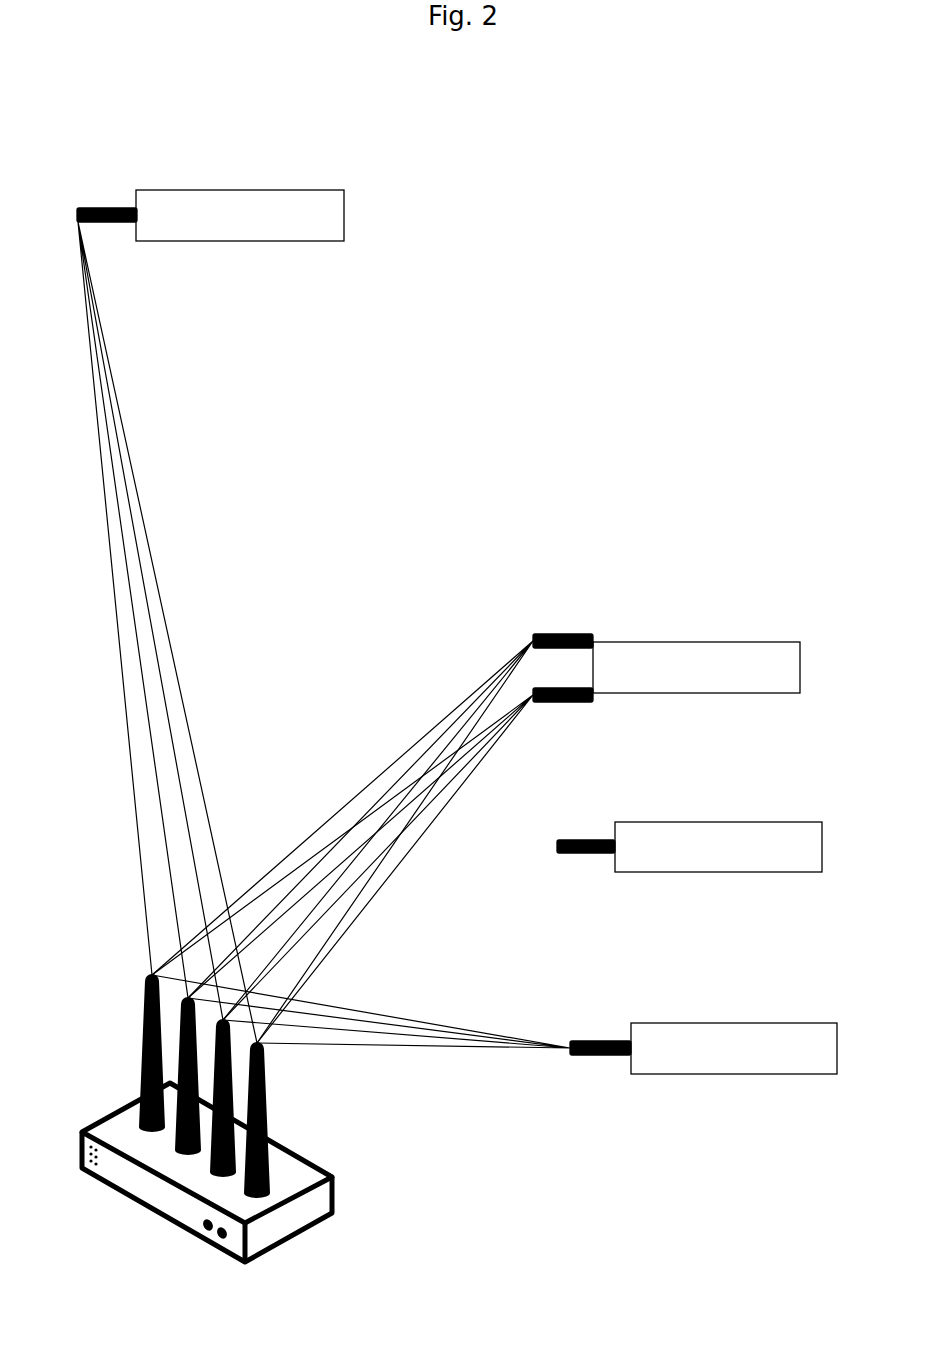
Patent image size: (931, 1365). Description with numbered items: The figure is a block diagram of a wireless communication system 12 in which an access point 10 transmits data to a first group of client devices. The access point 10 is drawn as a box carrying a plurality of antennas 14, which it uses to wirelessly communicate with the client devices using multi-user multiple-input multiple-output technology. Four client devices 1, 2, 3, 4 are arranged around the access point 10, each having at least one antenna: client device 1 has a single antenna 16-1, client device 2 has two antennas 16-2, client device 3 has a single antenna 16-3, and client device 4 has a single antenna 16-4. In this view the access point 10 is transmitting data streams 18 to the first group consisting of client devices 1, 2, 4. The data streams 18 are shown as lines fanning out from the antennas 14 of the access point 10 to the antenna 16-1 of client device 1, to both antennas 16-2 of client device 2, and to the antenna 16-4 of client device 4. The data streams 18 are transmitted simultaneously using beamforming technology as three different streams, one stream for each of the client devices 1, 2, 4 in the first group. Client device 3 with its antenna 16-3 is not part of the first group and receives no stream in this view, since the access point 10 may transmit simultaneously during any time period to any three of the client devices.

The client device 1 is at (240, 190).
The client device 2 is at (695, 641).
The client device 3 is at (718, 821).
The client device 4 is at (733, 1022).
The access point 10 is at (333, 1203).
The wireless communication system 12 is at (617, 335).
The antennas 14 is at (147, 1013).
The antenna 16-1 is at (107, 207).
The antennas 16-2 is at (562, 632).
The antenna 16-3 is at (587, 838).
The antenna 16-4 is at (600, 1040).
The data streams 18 is at (379, 748).